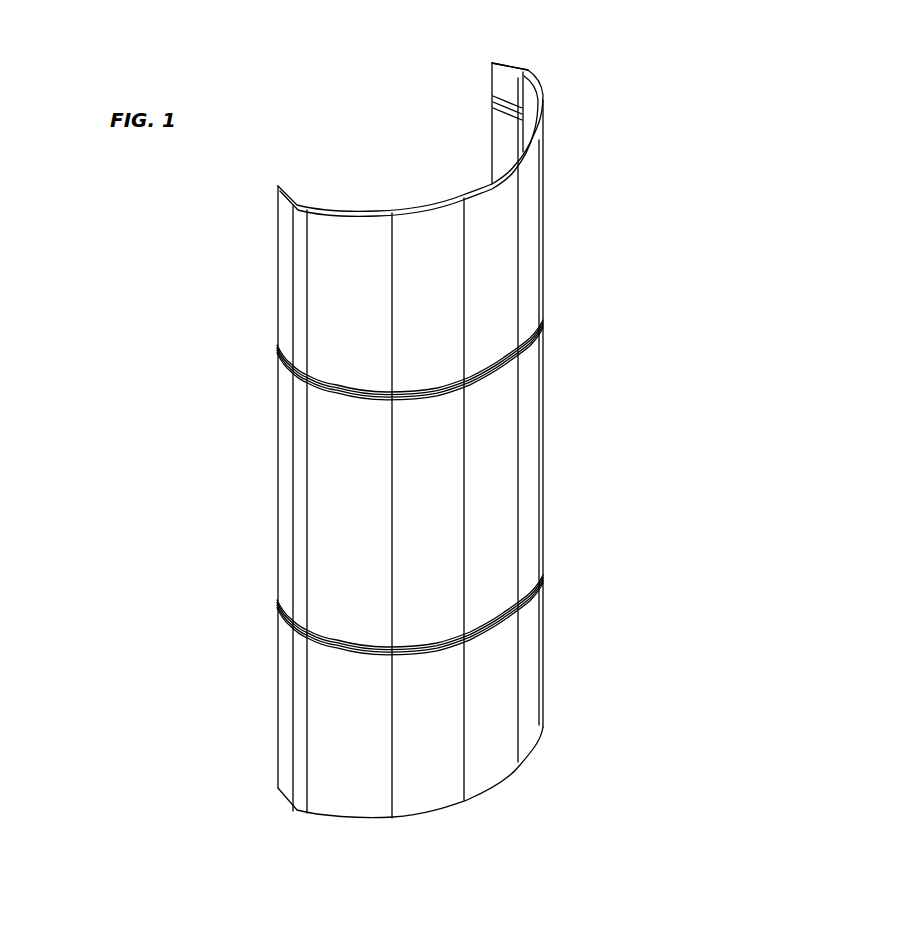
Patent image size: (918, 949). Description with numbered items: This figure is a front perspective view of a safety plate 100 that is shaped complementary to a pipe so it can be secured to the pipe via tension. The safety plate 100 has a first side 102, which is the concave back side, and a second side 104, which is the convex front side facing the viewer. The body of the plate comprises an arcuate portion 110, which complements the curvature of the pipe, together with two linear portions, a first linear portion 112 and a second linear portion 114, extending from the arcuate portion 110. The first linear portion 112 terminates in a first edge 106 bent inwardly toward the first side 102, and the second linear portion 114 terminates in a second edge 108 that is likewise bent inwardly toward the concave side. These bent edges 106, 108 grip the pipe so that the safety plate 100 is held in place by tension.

The safety plate 100 is at (360, 412).
The first side 102 is at (416, 203).
The second side 104 is at (484, 543).
The first edge 106 is at (278, 305).
The second edge 108 is at (491, 133).
The arcuate portion 110 is at (499, 425).
The first linear portion 112 is at (278, 570).
The second linear portion 114 is at (521, 62).